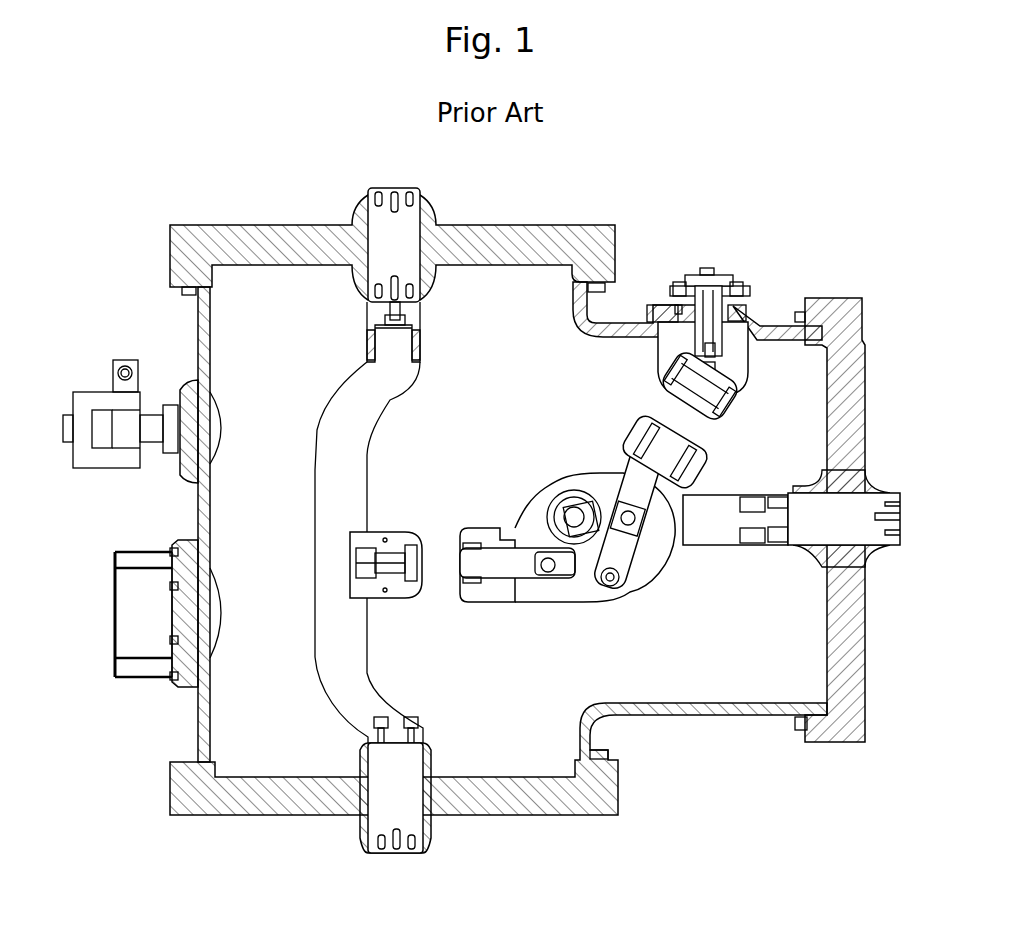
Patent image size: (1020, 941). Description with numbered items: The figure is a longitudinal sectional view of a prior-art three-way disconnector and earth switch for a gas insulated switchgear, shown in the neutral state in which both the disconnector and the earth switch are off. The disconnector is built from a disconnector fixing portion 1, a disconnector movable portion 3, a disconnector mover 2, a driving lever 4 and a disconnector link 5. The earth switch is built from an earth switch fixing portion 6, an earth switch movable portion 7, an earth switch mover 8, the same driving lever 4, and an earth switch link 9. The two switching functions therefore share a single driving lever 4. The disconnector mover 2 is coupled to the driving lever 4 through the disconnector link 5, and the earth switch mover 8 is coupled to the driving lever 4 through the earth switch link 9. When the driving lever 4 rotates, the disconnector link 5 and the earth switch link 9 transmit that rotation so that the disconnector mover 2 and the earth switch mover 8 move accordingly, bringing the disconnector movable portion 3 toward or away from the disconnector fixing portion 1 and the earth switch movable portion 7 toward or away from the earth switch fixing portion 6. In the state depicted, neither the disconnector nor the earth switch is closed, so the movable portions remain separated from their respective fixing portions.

The disconnector fixing portion 1 is at (377, 585).
The disconnector mover 2 is at (492, 565).
The disconnector movable portion 3 is at (477, 595).
The driving lever 4 is at (600, 568).
The disconnector link 5 is at (593, 540).
The earth switch fixing portion 6 is at (742, 403).
The earth switch movable portion 7 is at (700, 463).
The earth switch mover 8 is at (683, 487).
The earth switch link 9 is at (650, 543).